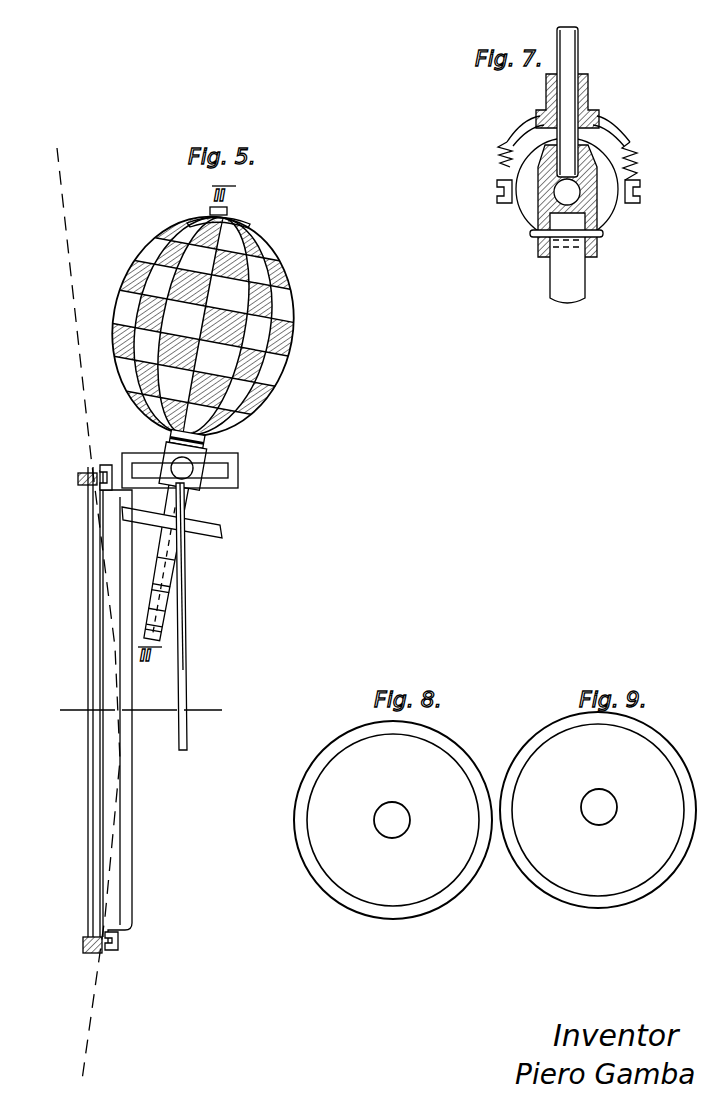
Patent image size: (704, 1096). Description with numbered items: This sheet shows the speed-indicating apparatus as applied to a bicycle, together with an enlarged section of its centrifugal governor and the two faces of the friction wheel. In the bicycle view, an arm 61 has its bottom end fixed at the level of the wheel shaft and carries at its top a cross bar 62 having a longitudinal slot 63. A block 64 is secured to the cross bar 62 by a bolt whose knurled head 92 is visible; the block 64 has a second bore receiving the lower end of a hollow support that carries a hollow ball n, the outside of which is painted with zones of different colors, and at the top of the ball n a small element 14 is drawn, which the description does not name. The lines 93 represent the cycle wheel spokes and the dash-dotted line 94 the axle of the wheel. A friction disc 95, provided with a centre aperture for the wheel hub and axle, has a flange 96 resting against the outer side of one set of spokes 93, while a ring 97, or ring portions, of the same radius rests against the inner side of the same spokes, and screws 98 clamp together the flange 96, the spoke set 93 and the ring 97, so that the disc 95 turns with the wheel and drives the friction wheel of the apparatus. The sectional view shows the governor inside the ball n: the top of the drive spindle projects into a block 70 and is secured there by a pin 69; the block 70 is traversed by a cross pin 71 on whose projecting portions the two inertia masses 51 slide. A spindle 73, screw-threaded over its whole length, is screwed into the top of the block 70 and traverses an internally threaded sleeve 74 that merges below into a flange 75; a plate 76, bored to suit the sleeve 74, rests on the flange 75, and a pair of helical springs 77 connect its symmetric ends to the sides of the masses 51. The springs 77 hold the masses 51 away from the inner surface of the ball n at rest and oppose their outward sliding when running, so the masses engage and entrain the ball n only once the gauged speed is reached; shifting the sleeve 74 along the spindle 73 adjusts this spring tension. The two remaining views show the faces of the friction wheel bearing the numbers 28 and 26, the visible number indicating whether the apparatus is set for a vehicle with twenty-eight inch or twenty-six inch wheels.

In FIG. 5, the globe cap collar 14 is at (248, 219).
In FIG. 5, the hollow ball n is at (279, 312).
In FIG. 5, the block 64 is at (192, 449).
In FIG. 5, the knurled head 92 is at (238, 458).
In FIG. 5, the cross bar 62 is at (238, 481).
In FIG. 5, the longitudinal slot 63 is at (225, 472).
In FIG. 5, the arm 61 is at (186, 642).
In FIG. 5, the axle 94 is at (205, 710).
In FIG. 5, the cycle wheel spokes 93 is at (82, 350).
In FIG. 5, the ring 97 is at (92, 852).
In FIG. 5, the friction disc 95 is at (132, 883).
In FIG. 5, the flange 96 is at (96, 467).
In FIG. 5, the screws 98 is at (82, 486).
In FIG. 7, the inertia masses 51 is at (528, 163).
In FIG. 7, the block 70 is at (552, 202).
In FIG. 7, the sleeve 74 is at (588, 78).
In FIG. 7, the spindle 73 is at (570, 53).
In FIG. 7, the cross pin 71 is at (572, 195).
In FIG. 7, the pin 69 is at (532, 238).
In FIG. 7, the plate 76 is at (523, 118).
In FIG. 7, the flange 75 is at (607, 117).
In FIG. 7, the helical springs 77 is at (637, 160).
In FIG. 8, the number 26 is at (393, 820).
In FIG. 9, the number 28 is at (598, 810).